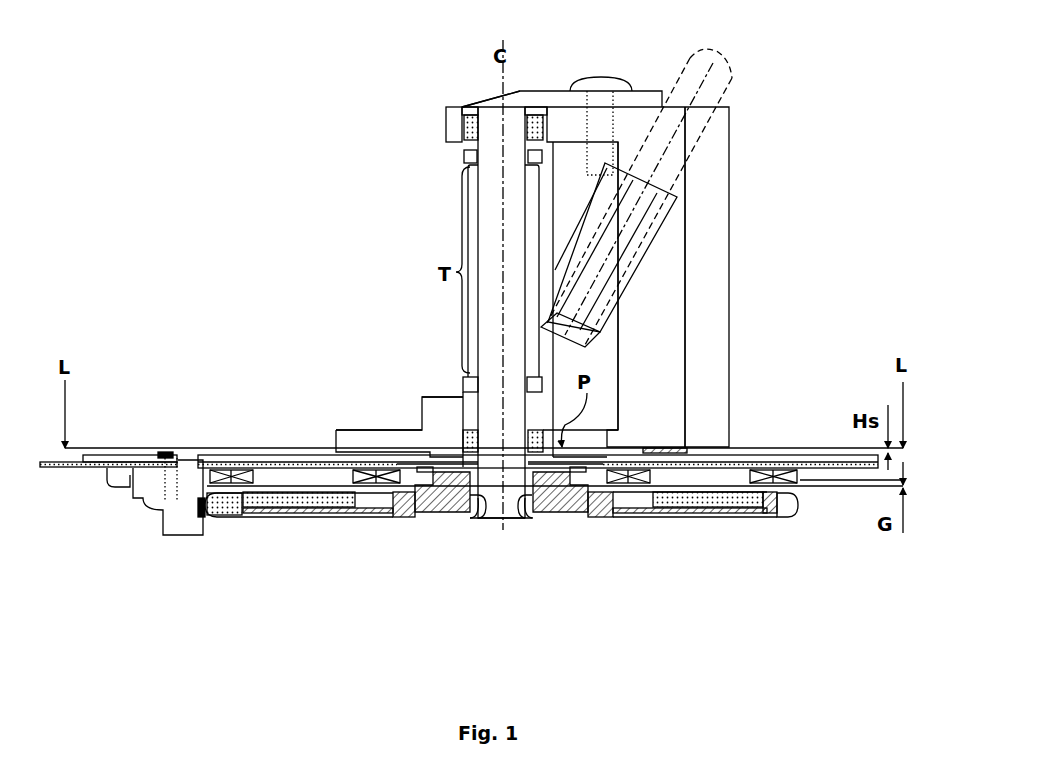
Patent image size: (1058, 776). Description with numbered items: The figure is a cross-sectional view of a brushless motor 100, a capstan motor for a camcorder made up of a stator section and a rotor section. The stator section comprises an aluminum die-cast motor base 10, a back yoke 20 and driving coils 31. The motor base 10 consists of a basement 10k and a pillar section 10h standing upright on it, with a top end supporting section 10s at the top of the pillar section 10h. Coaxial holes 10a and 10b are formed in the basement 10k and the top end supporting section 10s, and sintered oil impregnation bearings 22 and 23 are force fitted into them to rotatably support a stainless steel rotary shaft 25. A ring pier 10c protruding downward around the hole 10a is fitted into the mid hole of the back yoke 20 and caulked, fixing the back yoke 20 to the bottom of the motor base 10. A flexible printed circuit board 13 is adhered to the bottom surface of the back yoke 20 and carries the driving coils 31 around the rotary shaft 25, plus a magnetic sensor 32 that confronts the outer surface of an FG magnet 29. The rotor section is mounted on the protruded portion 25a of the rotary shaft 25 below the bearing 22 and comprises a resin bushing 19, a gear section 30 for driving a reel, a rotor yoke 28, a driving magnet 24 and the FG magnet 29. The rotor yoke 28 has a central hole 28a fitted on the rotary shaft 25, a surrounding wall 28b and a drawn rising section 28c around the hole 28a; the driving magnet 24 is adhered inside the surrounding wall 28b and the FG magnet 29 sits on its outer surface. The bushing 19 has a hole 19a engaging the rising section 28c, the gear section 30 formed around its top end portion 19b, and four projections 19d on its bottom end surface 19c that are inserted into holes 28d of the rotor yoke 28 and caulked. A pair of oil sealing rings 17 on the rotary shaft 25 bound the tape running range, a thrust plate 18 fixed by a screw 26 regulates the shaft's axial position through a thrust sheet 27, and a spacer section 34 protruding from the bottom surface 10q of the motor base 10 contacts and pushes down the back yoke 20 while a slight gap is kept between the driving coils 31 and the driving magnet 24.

The brushless motor 100 is at (205, 141).
The motor base 10 is at (730, 198).
The hole 10a is at (450, 393).
The hole 10b is at (463, 125).
The ring pier 10c is at (460, 443).
The pillar section 10h is at (717, 148).
The basement 10k is at (337, 443).
The bottom surface 10q is at (623, 450).
The top end supporting section 10s is at (445, 115).
The flexible printed circuit board 13 is at (63, 470).
The oil sealing rings 17 is at (460, 165).
The thrust plate 18 is at (553, 95).
The bushing 19 is at (638, 517).
The hole 19a is at (528, 517).
The top end portion 19b is at (578, 517).
The bottom end surface 19c is at (560, 513).
The projections 19d is at (617, 517).
The back yoke 20 is at (248, 456).
The sintered oil impregnation bearing 22 is at (437, 408).
The sintered oil impregnation bearing 23 is at (462, 147).
The driving magnet 24 is at (730, 517).
The rotary shaft 25 is at (488, 228).
The protruded portion 25a is at (500, 523).
The screw 26 is at (597, 80).
The thrust sheet 27 is at (472, 105).
The rotor yoke 28 is at (298, 517).
The hole 28a is at (480, 520).
The surrounding wall 28b is at (227, 517).
The rising section 28c is at (447, 517).
The holes 28d is at (393, 518).
The FG magnet 29 is at (790, 505).
The gear section 30 is at (407, 520).
The driving coil 31 is at (197, 478).
The magnetic sensor 32 is at (177, 525).
The spacer section 34 is at (668, 448).